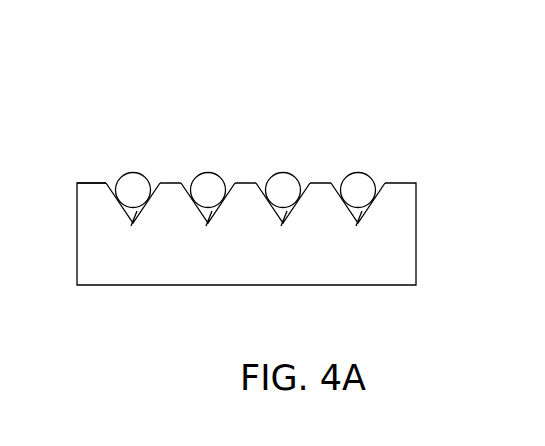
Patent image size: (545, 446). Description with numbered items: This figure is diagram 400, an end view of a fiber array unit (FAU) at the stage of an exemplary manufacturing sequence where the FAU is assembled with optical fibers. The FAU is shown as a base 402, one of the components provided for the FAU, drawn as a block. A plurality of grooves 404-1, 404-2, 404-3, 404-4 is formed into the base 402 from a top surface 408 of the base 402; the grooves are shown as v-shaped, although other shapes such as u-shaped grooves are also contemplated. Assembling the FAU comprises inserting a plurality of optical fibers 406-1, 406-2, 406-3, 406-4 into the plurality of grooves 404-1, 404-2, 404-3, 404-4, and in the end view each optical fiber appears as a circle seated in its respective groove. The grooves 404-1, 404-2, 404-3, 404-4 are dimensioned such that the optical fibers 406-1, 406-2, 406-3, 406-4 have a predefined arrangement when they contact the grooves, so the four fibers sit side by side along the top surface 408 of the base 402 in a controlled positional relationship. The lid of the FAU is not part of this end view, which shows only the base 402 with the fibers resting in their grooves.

The diagram 400 is at (276, 183).
The base 402 is at (416, 233).
The groove 404-1 is at (133, 225).
The groove 404-2 is at (208, 225).
The groove 404-3 is at (283, 225).
The groove 404-4 is at (358, 225).
The optical fiber 406-1 is at (132, 172).
The optical fiber 406-2 is at (207, 172).
The optical fiber 406-3 is at (282, 172).
The optical fiber 406-4 is at (357, 172).
The top surface 408 is at (91, 172).